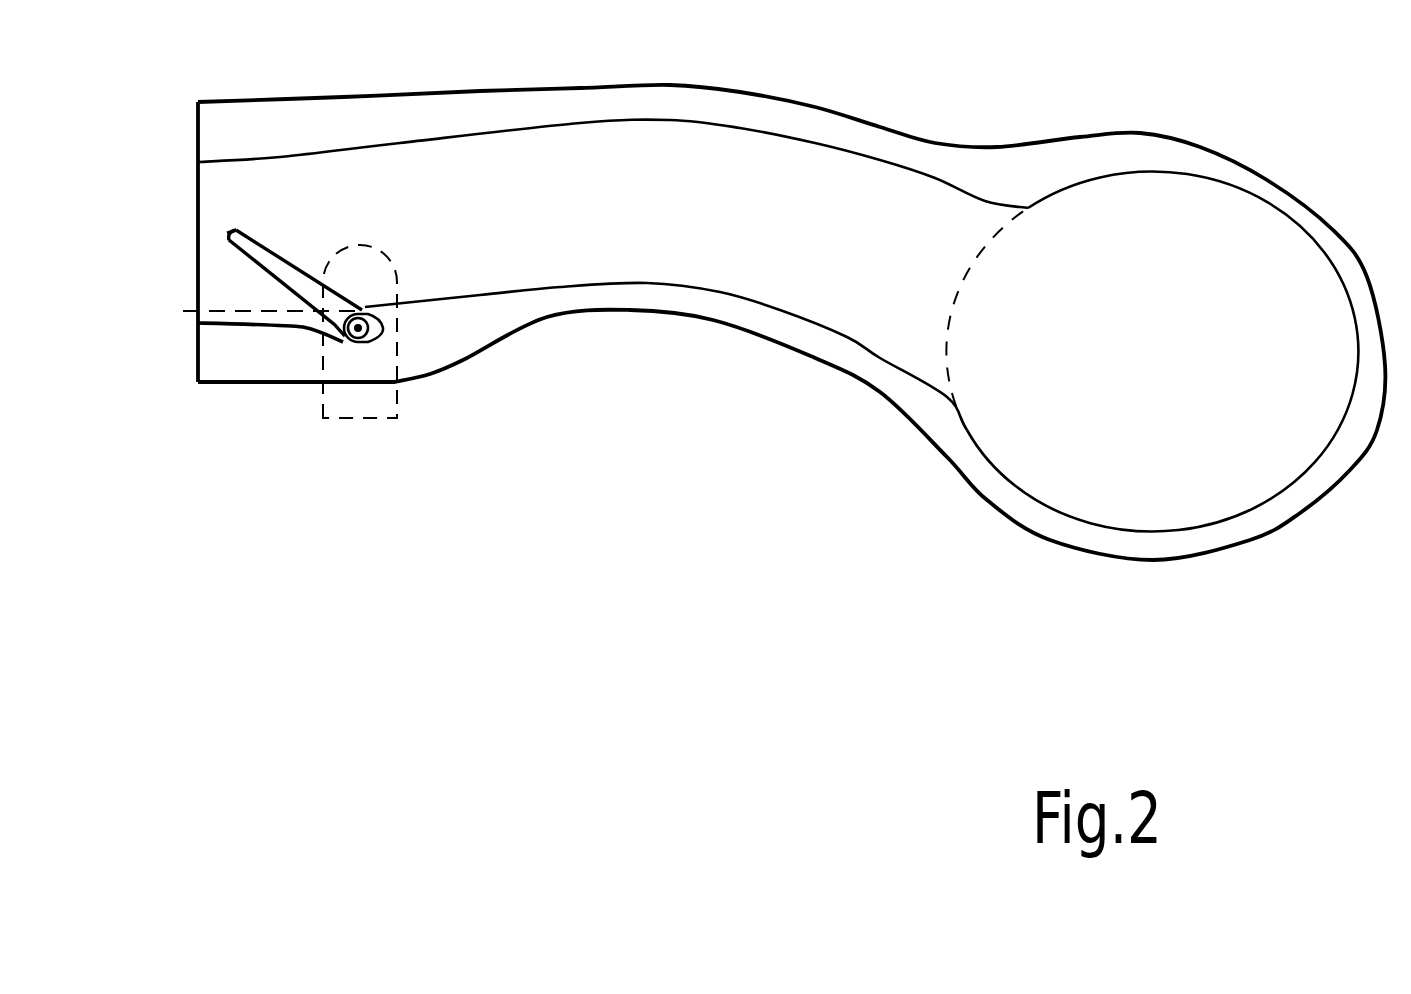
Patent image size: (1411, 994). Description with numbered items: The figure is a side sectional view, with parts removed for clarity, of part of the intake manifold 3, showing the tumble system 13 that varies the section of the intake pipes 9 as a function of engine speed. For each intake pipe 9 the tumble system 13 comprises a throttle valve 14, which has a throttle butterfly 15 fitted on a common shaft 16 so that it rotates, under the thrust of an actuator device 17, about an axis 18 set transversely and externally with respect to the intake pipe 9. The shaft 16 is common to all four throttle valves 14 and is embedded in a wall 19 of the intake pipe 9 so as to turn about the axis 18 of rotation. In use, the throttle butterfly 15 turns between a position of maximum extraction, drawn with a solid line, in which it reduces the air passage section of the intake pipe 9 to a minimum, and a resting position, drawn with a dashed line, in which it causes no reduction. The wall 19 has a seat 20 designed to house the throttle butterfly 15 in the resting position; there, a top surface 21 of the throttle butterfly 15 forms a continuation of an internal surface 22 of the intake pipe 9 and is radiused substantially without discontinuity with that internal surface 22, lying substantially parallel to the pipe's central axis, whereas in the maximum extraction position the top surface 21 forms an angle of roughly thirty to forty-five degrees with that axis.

The intake manifold 3 is at (1197, 192).
The intake pipe 9 is at (782, 145).
The tumble system 13 is at (306, 502).
The throttle valve 14 is at (324, 195).
The throttle butterfly 15 is at (227, 232).
The common shaft 16 is at (343, 342).
The actuator device 17 is at (410, 334).
The axis 18 is at (380, 350).
The wall 19 is at (358, 375).
The seat 20 is at (261, 314).
The top surface 21 is at (309, 258).
The internal surface 22 is at (829, 328).